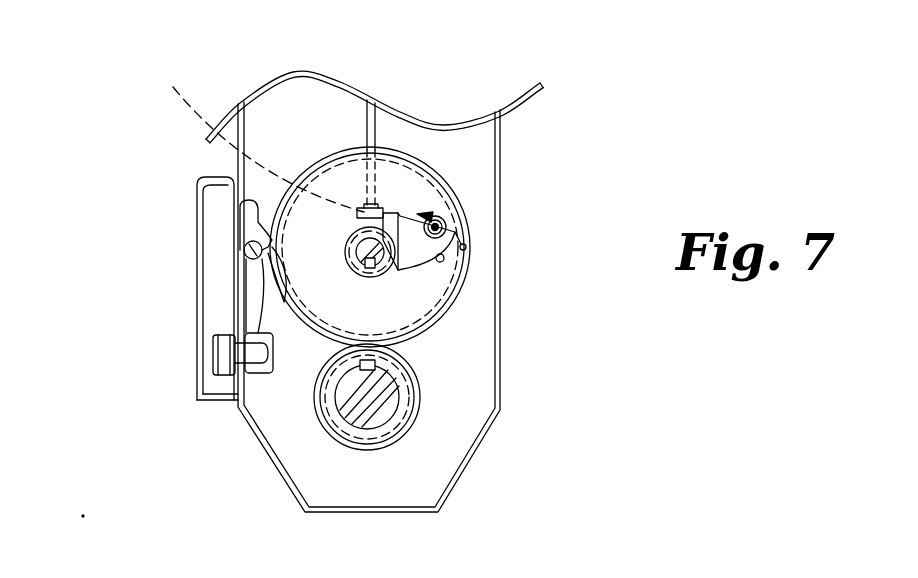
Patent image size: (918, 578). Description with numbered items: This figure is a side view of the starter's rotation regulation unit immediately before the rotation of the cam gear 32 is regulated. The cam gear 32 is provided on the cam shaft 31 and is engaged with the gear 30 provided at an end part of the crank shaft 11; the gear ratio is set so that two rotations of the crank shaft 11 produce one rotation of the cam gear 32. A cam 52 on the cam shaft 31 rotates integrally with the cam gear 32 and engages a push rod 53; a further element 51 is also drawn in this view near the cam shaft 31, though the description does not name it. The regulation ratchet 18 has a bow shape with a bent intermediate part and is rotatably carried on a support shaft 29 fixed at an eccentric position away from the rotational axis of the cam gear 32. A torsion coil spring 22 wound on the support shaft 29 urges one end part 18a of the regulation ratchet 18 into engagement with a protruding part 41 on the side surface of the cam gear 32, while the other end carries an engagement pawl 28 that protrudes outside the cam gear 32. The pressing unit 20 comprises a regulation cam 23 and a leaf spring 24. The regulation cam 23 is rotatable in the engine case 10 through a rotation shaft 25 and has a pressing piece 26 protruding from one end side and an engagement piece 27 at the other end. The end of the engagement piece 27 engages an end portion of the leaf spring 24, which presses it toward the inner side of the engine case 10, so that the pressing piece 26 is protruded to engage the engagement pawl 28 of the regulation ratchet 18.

The engine case 10 is at (267, 465).
The crank shaft 11 is at (377, 408).
The regulation ratchet 18 is at (405, 205).
The one end part of the regulation ratchet 18a is at (373, 200).
The pressing unit 20 is at (116, 216).
The torsion coil spring 22 is at (400, 237).
The regulation cam 23 is at (255, 229).
The leaf spring 24 is at (248, 273).
The rotation shaft 25 is at (272, 260).
The pressing piece 26 is at (230, 338).
The engagement piece 27 is at (250, 212).
The engagement pawl 28 is at (467, 248).
The support shaft 29 is at (450, 226).
The gear 30 is at (425, 393).
The cam shaft 31 is at (395, 258).
The cam gear 32 is at (403, 203).
The protruding part 41 is at (440, 216).
The hub shaft 51 is at (395, 275).
The cam 52 is at (252, 135).
The push rod 53 is at (370, 130).